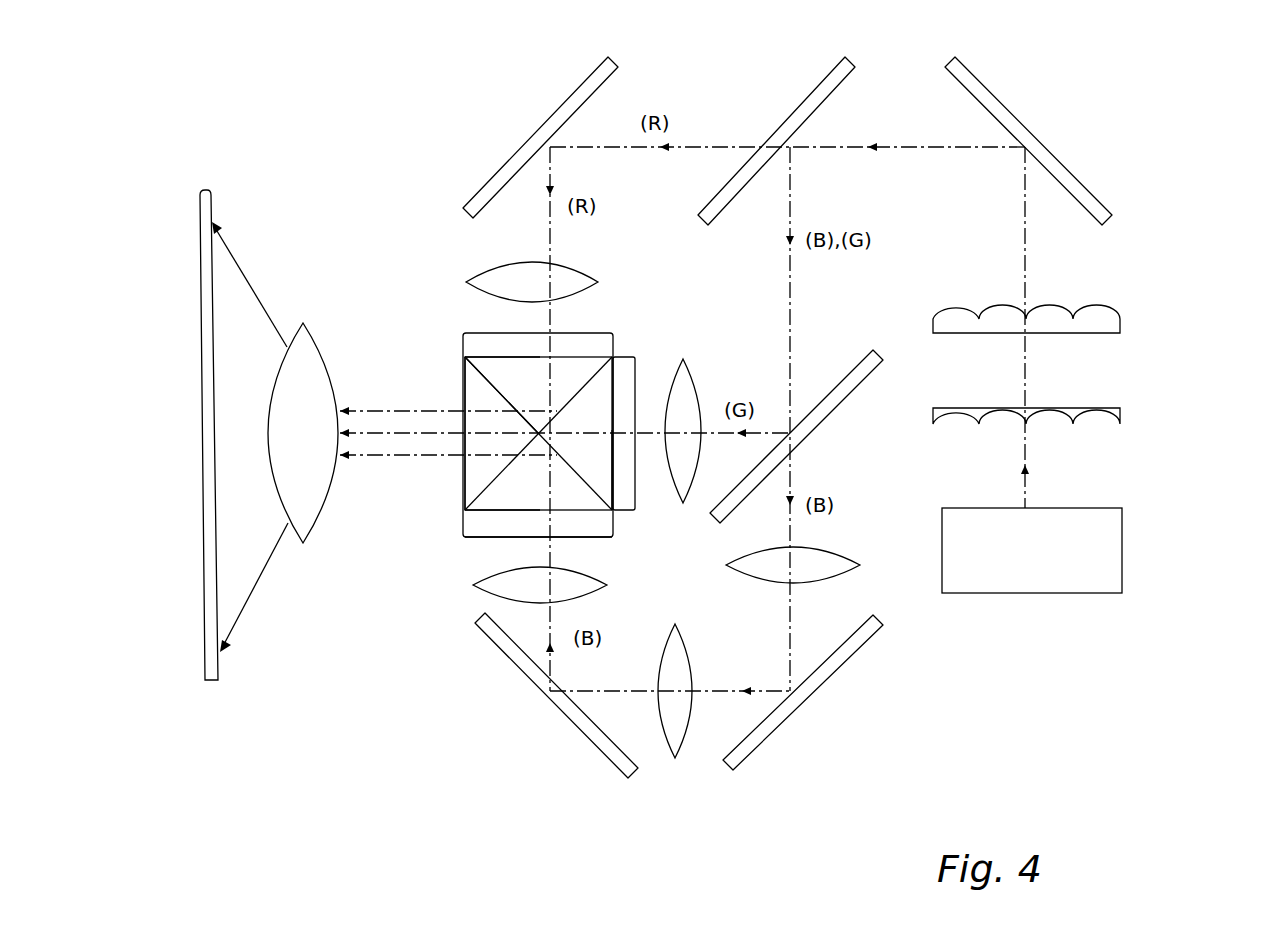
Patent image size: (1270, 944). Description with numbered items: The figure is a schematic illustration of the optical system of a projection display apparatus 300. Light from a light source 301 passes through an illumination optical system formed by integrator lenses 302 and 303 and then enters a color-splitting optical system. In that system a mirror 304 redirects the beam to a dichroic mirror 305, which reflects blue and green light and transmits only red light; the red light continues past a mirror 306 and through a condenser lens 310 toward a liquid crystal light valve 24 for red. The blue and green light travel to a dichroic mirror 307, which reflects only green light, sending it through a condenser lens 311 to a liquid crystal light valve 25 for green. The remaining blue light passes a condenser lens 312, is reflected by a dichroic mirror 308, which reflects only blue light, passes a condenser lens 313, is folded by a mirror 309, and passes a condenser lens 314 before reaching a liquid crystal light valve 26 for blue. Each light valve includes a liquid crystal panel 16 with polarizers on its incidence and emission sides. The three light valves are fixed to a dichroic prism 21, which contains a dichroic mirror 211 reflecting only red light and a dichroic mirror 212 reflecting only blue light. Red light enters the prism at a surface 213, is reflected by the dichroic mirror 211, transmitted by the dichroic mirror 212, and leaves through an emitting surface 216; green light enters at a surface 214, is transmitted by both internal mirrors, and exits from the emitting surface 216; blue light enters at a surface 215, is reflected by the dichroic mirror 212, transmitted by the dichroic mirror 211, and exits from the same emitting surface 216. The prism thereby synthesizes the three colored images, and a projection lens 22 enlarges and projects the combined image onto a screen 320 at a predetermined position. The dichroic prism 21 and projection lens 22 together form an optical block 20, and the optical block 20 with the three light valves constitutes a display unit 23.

The projection display apparatus 300 is at (1135, 125).
The light source 301 is at (1122, 568).
The integrator lens 302 is at (1112, 424).
The integrator lens 303 is at (1102, 328).
The mirror 304 is at (1005, 108).
The dichroic mirror 305 is at (800, 110).
The mirror 306 is at (565, 102).
The dichroic mirror 307 is at (838, 385).
The dichroic mirror 308 is at (855, 655).
The mirror 309 is at (528, 675).
The condenser lens 310 is at (495, 272).
The condenser lens 311 is at (703, 368).
The condenser lens 312 is at (827, 555).
The condenser lens 313 is at (682, 735).
The condenser lens 314 is at (490, 588).
The screen 320 is at (215, 682).
The optical block 20 is at (285, 437).
The dichroic prism 21 is at (538, 436).
The projection lens 22 is at (310, 358).
The display unit 23 is at (538, 391).
The liquid crystal light valve 24 is at (463, 345).
The liquid crystal light valve 25 is at (628, 378).
The liquid crystal light valve 26 is at (607, 520).
The liquid crystal panel 16 is at (495, 345).
The dichroic mirror 211 is at (468, 480).
The dichroic mirror 212 is at (468, 380).
The surface 213 is at (493, 358).
The surface 214 is at (612, 490).
The surface 215 is at (493, 510).
The emitting surface 216 is at (465, 405).